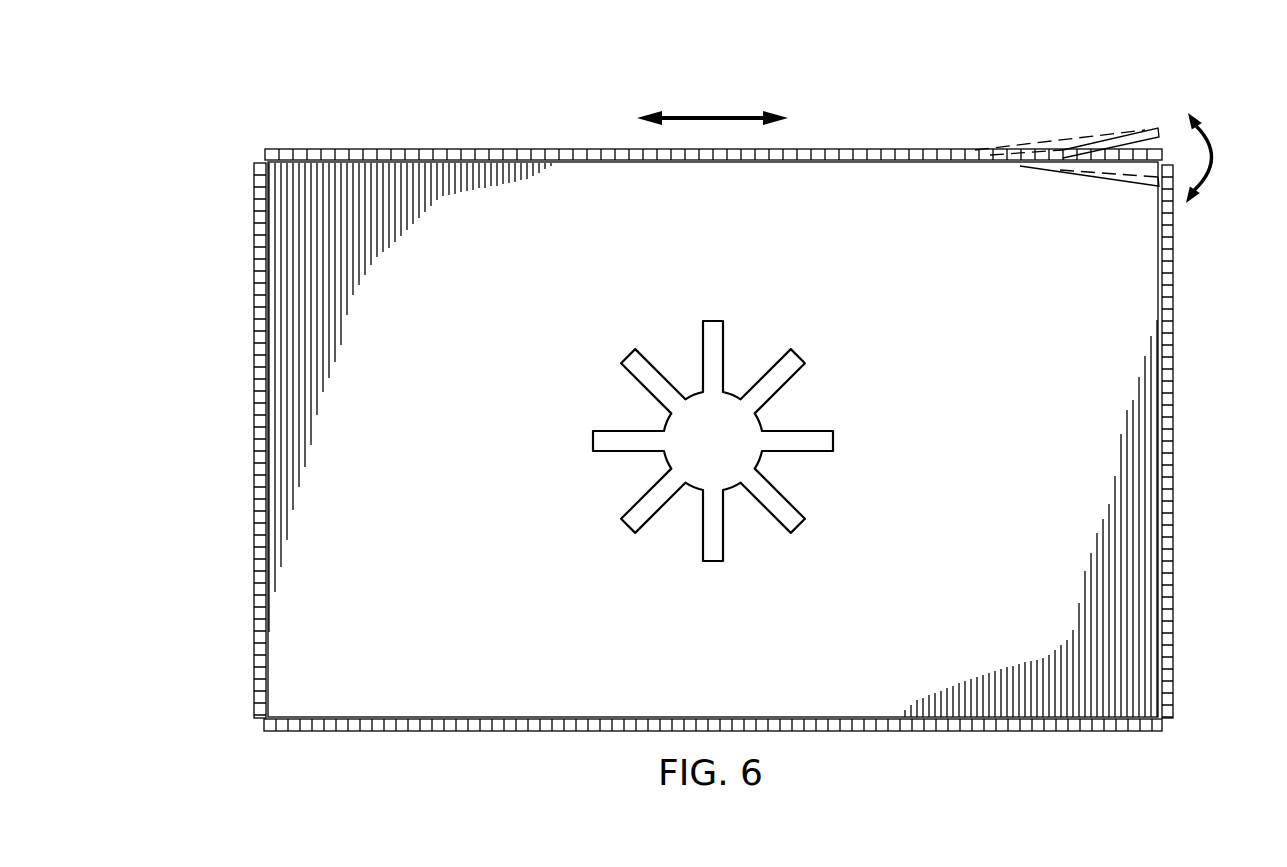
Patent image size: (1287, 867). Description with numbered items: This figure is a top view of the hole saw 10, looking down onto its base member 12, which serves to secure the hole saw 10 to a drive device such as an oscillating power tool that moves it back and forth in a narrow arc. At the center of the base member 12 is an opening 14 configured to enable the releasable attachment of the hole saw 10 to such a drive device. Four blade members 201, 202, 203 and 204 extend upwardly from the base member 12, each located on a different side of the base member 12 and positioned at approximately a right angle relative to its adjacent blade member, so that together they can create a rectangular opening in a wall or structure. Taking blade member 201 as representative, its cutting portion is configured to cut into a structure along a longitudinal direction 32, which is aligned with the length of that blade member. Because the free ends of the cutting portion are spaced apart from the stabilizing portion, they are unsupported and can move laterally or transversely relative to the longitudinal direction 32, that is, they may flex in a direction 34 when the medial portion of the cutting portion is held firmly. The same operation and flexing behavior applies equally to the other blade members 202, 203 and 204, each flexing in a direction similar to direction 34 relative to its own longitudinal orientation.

The hole saw 10 is at (460, 92).
The base member 12 is at (958, 345).
The opening 14 is at (790, 447).
The blade member 201 is at (344, 740).
The blade member 202 is at (244, 349).
The blade member 203 is at (1185, 518).
The blade member 204 is at (924, 143).
The longitudinal direction 32 is at (712, 114).
The direction 34 is at (1216, 155).